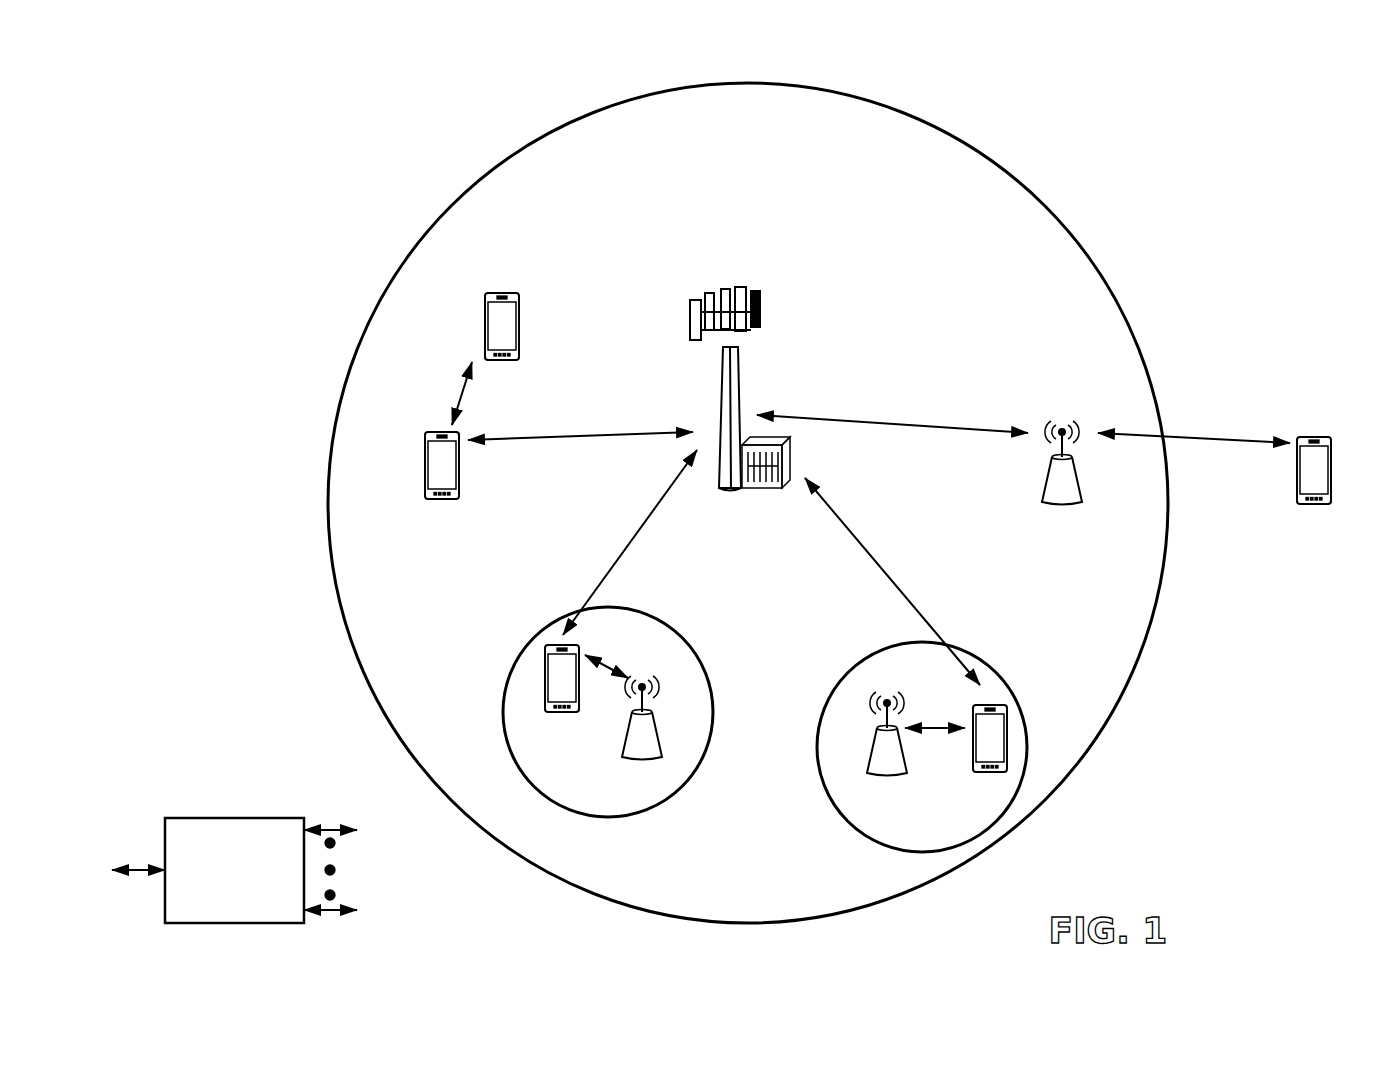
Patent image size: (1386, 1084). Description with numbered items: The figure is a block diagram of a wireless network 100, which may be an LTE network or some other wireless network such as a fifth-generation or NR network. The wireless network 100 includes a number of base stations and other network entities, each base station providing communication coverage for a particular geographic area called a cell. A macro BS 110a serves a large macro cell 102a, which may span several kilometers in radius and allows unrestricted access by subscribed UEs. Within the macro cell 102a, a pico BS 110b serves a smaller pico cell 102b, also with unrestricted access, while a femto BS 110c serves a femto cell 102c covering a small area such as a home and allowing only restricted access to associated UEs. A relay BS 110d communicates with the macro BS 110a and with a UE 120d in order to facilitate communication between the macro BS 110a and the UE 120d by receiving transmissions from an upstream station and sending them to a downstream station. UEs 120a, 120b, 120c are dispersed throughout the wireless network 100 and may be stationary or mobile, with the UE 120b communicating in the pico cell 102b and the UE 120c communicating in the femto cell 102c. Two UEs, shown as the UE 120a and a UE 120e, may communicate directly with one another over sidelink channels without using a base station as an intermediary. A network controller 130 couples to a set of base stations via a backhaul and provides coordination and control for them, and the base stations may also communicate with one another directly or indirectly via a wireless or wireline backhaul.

The wireless network 100 is at (218, 80).
The macro cell 102a is at (1027, 185).
The pico cell 102b is at (708, 640).
The femto cell 102c is at (859, 662).
The macro BS 110a is at (735, 285).
The pico BS 110b is at (666, 737).
The femto BS 110c is at (870, 758).
The relay BS 110d is at (1062, 423).
The UE 120a is at (425, 460).
The UE 120b is at (547, 714).
The UE 120c is at (975, 775).
The UE 120d is at (1325, 437).
The UE 120e is at (485, 305).
The network controller 130 is at (229, 818).